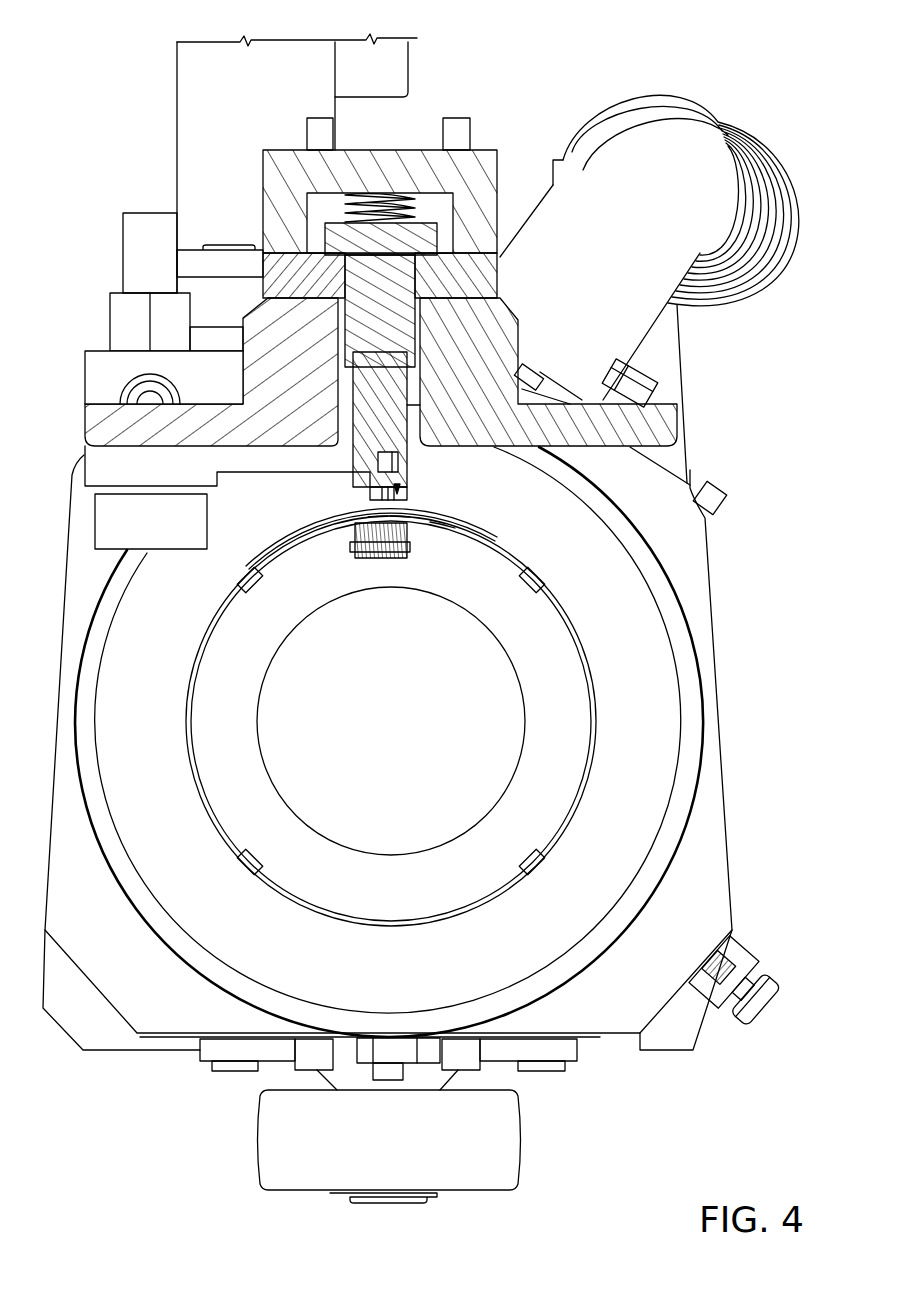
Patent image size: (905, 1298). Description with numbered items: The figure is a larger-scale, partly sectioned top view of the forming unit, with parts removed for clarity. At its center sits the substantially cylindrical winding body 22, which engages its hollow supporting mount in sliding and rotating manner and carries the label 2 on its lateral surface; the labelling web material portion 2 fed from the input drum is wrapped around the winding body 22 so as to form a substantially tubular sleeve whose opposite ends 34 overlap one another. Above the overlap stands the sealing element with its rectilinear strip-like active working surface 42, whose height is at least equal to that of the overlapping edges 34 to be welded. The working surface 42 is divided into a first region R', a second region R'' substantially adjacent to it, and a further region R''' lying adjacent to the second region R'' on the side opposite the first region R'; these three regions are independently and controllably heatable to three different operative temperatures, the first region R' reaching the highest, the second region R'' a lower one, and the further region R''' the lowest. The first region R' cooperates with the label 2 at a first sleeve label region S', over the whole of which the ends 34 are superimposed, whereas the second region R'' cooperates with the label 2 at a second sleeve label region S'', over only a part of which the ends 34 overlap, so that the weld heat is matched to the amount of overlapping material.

The label 2 is at (571, 620).
The winding body 22 is at (560, 712).
The overlapping ends 34 is at (330, 523).
The active working surface 42 is at (400, 488).
The first region R' is at (441, 547).
The second region R'' is at (442, 505).
The further region R''' is at (346, 503).
The first sleeve label region S' is at (380, 570).
The second sleeve label region S'' is at (401, 589).